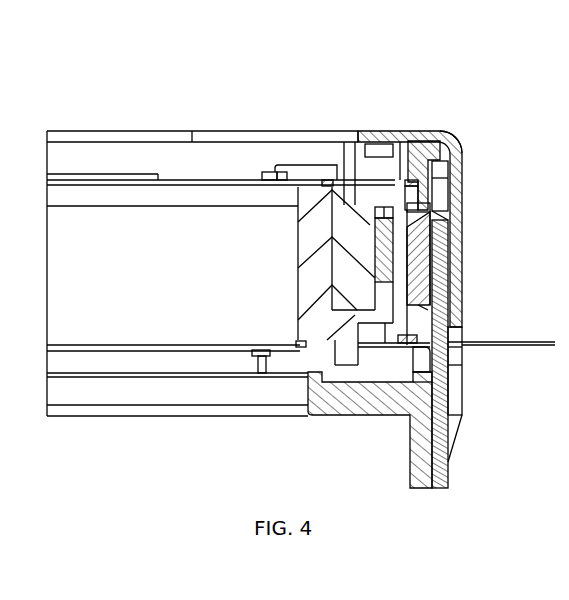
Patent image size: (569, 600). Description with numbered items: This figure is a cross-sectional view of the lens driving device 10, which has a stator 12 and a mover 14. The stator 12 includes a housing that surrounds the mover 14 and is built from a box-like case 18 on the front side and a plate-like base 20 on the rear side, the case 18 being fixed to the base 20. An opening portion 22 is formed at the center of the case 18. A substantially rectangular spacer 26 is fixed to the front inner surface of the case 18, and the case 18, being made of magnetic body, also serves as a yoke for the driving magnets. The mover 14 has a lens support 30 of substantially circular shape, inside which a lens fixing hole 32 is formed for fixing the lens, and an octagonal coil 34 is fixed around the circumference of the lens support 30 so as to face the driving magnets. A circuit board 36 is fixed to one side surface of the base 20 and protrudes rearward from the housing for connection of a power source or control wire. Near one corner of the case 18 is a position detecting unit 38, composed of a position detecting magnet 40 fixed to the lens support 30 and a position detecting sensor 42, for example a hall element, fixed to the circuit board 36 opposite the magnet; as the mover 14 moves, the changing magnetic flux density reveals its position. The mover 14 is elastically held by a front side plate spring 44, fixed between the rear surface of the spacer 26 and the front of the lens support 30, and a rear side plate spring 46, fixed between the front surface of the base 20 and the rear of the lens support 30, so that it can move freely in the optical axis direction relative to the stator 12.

The lens driving device 10 is at (484, 106).
The stator 12 is at (462, 222).
The mover 14 is at (195, 351).
The case 18 is at (421, 141).
The base 20 is at (334, 400).
The opening portion 22 is at (357, 131).
The spacer 26 is at (446, 132).
The lens support 30 is at (300, 252).
The lens fixing hole 32 is at (298, 293).
The coil 34 is at (400, 214).
The circuit board 36 is at (437, 417).
The position detecting unit 38 is at (418, 309).
The position detecting magnet 40 is at (336, 220).
The position detecting sensor 42 is at (434, 258).
The front side plate spring 44 is at (213, 181).
The rear side plate spring 46 is at (388, 348).